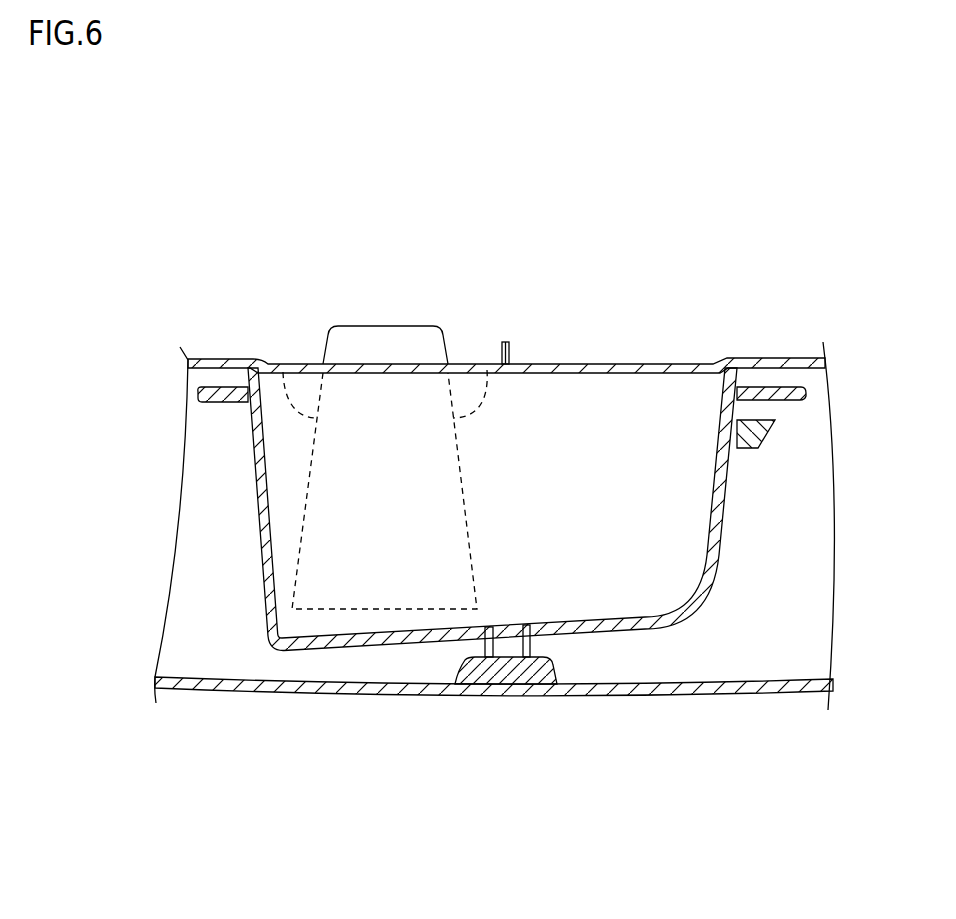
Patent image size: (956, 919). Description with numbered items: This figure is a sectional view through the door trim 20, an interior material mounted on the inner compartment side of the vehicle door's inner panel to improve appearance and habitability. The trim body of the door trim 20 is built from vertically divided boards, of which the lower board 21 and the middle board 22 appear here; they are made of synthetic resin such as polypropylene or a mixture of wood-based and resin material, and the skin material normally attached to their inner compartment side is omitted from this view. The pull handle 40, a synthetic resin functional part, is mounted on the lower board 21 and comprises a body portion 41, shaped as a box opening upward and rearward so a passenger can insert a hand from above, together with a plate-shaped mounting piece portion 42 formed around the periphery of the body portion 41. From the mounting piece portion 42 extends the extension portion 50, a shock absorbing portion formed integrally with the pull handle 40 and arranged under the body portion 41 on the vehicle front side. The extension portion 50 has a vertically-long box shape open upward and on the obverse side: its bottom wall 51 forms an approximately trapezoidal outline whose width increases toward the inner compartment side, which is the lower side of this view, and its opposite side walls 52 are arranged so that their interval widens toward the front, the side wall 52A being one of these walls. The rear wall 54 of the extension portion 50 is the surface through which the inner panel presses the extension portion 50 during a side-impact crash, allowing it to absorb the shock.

The door trim 20 is at (228, 340).
The lower board 21 is at (713, 690).
The middle board 22 is at (607, 364).
The pull handle 40 is at (477, 563).
The body portion 41 is at (603, 623).
The mounting piece portion 42 is at (774, 388).
The extension portion 50 is at (392, 471).
The bottom wall 51 is at (383, 609).
The opposite side walls 52 is at (283, 372).
The side wall 52A is at (487, 370).
The rear wall 54 is at (388, 327).